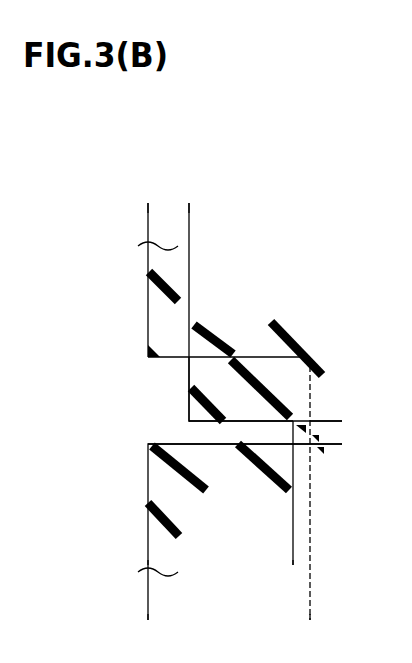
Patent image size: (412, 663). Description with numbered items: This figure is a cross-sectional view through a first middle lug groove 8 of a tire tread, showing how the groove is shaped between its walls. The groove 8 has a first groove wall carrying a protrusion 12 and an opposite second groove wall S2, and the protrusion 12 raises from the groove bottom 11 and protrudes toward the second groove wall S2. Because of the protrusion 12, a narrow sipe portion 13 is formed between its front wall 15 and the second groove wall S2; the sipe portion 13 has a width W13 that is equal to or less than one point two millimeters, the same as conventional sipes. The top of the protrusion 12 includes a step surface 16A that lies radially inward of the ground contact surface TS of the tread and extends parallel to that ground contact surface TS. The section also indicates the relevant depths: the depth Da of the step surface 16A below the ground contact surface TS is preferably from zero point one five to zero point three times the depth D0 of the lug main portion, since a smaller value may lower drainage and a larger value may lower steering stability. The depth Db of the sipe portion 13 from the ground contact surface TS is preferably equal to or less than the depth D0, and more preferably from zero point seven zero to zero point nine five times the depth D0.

The ground contact surface TS is at (148, 295).
The step surface 16A is at (189, 377).
The protrusion 12 is at (189, 399).
The first middle lug groove 8 is at (135, 432).
The second groove wall S2 is at (212, 458).
The front wall 15 is at (240, 430).
The groove bottom 11 is at (306, 370).
The sipe portion 13 is at (272, 430).
The width of the sipe portion W13 is at (338, 453).
The depth of the step surface Da is at (198, 216).
The depth of the sipe portion Db is at (283, 564).
The depth of the lug main portion D0 is at (300, 618).